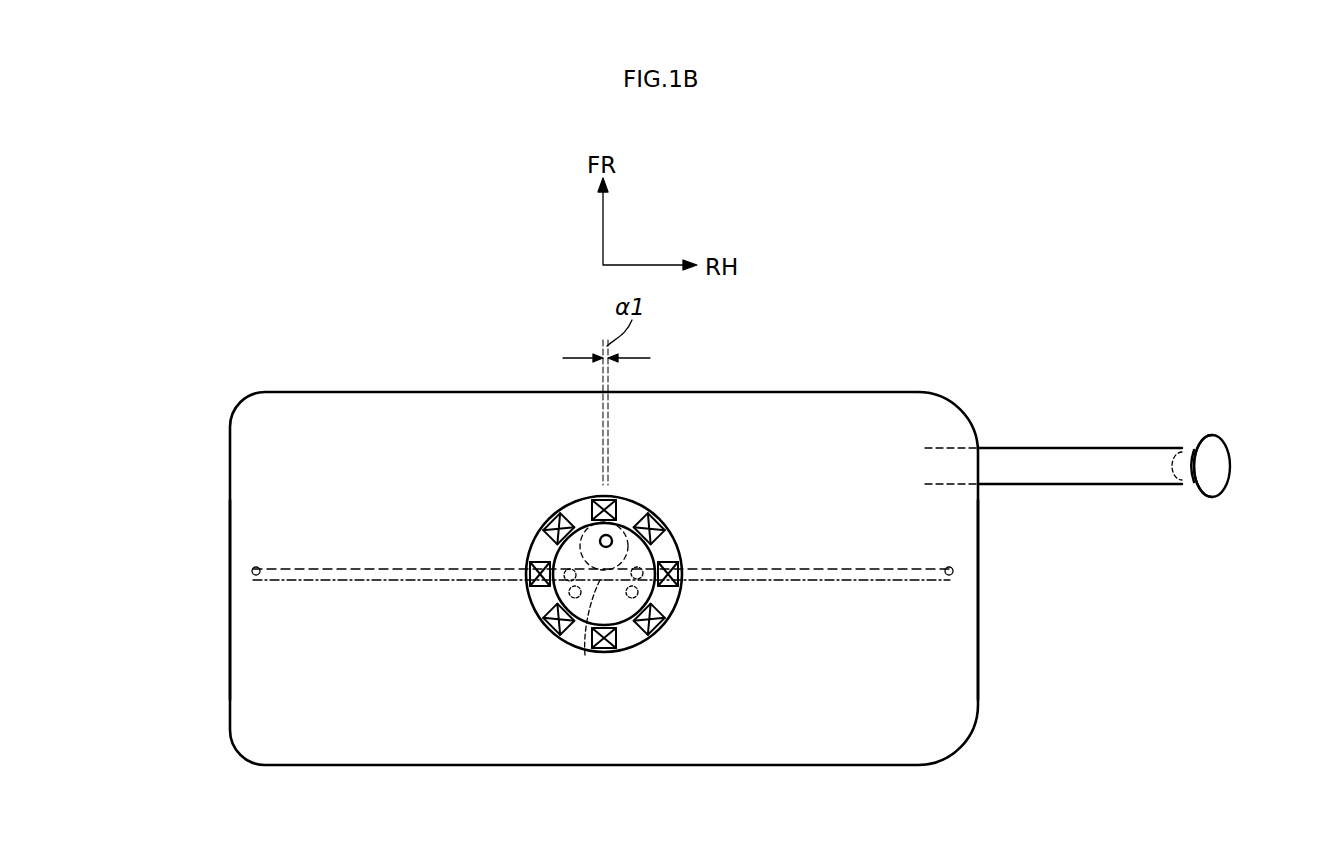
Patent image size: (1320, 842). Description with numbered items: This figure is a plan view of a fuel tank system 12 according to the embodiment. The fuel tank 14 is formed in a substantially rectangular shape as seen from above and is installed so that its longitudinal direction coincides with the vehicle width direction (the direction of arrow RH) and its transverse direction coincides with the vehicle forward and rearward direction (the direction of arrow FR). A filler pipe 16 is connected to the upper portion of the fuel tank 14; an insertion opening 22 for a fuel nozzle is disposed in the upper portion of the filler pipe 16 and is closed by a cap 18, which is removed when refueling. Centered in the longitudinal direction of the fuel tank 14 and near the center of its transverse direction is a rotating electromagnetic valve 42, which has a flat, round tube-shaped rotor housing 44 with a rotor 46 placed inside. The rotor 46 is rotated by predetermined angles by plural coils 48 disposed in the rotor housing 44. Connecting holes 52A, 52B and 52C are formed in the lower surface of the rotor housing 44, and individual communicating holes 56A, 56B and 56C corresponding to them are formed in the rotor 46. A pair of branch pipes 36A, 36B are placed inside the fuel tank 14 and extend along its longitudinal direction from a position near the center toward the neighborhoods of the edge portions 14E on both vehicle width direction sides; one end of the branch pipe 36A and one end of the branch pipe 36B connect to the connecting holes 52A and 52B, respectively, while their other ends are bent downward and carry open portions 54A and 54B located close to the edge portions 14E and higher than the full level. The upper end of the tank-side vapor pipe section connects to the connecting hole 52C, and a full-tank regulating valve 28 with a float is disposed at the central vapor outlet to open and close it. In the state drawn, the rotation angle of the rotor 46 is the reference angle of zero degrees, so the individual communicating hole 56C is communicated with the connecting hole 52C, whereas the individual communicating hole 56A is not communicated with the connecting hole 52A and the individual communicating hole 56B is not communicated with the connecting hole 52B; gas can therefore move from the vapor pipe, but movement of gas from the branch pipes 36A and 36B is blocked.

The fuel tank system 12 is at (970, 256).
The fuel tank 14 is at (241, 763).
The edge portions 14E is at (230, 643).
The filler pipe 16 is at (1108, 486).
The cap 18 is at (1218, 466).
The insertion opening 22 is at (1193, 440).
The full-tank regulating valve 28 is at (603, 567).
The branch pipe 36A is at (396, 568).
The branch pipe 36B is at (821, 568).
The rotating electromagnetic valve 42 is at (614, 587).
The rotor housing 44 is at (575, 500).
The rotor 46 is at (535, 543).
The coils 48 is at (662, 523).
The connecting hole 52A is at (565, 578).
The connecting hole 52B is at (642, 571).
The connecting hole 52C is at (609, 540).
The open portion 54A is at (257, 575).
The open portion 54B is at (950, 575).
The individual communicating hole 56A is at (573, 598).
The individual communicating hole 56B is at (640, 594).
The individual communicating hole 56C is at (609, 540).